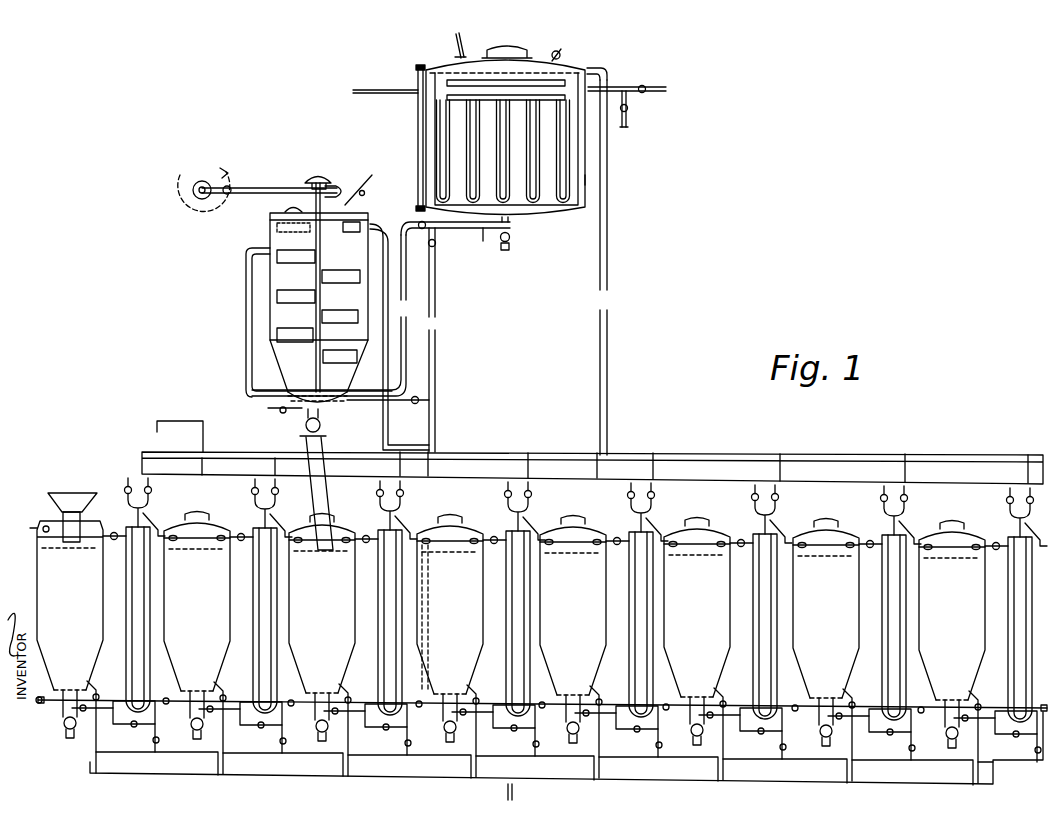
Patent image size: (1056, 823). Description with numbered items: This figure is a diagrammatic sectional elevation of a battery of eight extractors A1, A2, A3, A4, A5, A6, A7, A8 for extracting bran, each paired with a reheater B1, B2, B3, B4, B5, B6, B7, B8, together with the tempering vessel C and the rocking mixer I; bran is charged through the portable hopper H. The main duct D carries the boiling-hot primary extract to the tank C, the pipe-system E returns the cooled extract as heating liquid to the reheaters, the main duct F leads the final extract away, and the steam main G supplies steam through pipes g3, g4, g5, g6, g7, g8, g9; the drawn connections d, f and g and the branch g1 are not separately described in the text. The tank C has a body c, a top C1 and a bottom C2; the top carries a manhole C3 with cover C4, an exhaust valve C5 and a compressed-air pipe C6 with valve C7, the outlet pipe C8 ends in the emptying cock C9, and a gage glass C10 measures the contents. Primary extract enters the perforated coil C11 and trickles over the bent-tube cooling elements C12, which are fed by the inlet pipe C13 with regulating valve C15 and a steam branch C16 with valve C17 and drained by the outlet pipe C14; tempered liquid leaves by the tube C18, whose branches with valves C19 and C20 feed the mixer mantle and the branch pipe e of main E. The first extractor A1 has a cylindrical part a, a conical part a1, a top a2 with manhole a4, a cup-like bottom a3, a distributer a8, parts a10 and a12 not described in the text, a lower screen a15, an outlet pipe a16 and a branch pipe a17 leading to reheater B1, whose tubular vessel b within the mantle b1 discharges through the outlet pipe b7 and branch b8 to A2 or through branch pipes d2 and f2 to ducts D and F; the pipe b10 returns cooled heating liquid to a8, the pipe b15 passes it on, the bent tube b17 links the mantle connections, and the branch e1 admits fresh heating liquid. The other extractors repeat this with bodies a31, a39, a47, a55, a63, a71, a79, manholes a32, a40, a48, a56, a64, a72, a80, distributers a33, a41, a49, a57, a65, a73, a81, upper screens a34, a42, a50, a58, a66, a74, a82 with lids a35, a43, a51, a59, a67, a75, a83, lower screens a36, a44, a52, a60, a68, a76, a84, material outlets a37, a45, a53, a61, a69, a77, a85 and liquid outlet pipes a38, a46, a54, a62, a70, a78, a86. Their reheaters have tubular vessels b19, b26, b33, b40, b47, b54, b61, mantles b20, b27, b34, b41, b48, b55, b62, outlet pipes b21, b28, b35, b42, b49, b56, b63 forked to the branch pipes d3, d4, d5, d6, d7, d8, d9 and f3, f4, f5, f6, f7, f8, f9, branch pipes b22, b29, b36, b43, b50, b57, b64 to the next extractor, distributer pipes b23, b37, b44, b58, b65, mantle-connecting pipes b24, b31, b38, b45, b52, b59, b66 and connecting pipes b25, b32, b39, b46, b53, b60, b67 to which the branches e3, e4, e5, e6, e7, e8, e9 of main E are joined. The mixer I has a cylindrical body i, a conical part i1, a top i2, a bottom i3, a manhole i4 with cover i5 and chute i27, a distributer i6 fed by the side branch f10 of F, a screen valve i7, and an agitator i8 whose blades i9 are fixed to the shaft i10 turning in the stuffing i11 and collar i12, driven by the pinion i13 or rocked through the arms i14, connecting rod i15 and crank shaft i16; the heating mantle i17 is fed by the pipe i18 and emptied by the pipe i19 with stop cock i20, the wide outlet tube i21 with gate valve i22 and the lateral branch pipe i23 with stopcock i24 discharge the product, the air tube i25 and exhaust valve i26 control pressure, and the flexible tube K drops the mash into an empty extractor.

The extractor A1 is at (70, 605).
The extractor A2 is at (197, 602).
The extractor A3 is at (322, 604).
The extractor A4 is at (450, 605).
The extractor A5 is at (573, 606).
The extractor A6 is at (697, 608).
The extractor A7 is at (826, 609).
The extractor A8 is at (952, 611).
The reheater B1 is at (125, 668).
The reheater B2 is at (252, 669).
The reheater B3 is at (378, 669).
The reheater B4 is at (505, 667).
The reheater B5 is at (629, 669).
The reheater B6 is at (753, 669).
The reheater B7 is at (881, 669).
The reheater B8 is at (1007, 671).
The tempering vessel C is at (588, 193).
The body of tempering tank c is at (588, 180).
The top of tempering tank C1 is at (578, 68).
The bottom of tempering tank C2 is at (530, 212).
The manhole C3 is at (538, 60).
The manhole cover C4 is at (500, 52).
The exhaust valve C5 is at (561, 53).
The compressed-air pipe C6 is at (454, 40).
The valve C7 is at (456, 50).
The outlet pipe C8 is at (510, 240).
The emptying cock C9 is at (508, 250).
The gage glass C10 is at (418, 129).
The perforated coil C11 is at (592, 69).
The cooling elements C12 is at (446, 134).
The inlet pipe C13 is at (666, 88).
The outlet pipe C14 is at (362, 89).
The valve C15 is at (644, 86).
The steam branch pipe C16 is at (627, 127).
The valve C17 is at (628, 109).
The outlet tube C18 is at (482, 242).
The valve C19 is at (419, 223).
The valve C20 is at (434, 246).
The main duct D is at (127, 470).
The pipe-system E is at (150, 752).
The main duct F is at (562, 453).
The steam-main G is at (645, 781).
The hopper H is at (64, 490).
The rocking mixer I is at (270, 305).
The flexible tube K is at (318, 469).
The supply pipe d is at (608, 310).
The branch pipe d2 is at (127, 481).
The branch pipe d3 is at (254, 492).
The branch pipe d4 is at (365, 466).
The branch pipe d5 is at (488, 465).
The branch pipe d6 is at (625, 467).
The branch pipe d7 is at (745, 467).
The branch pipe d8 is at (865, 466).
The branch pipe d9 is at (990, 466).
The branch pipe e is at (435, 330).
The branch pipe e1 is at (159, 741).
The branch pipe e3 is at (284, 742).
The branch pipe e4 is at (406, 752).
The branch pipe e5 is at (536, 743).
The branch pipe e6 is at (656, 743).
The branch pipe e7 is at (771, 744).
The branch pipe e8 is at (896, 745).
The branch pipe e9 is at (1036, 746).
The feed pipe f is at (180, 426).
The branch pipe f2 is at (170, 463).
The branch pipe f3 is at (245, 464).
The branch pipe f4 is at (413, 466).
The branch pipe f5 is at (548, 466).
The branch pipe f6 is at (670, 466).
The branch pipe f7 is at (800, 467).
The branch pipe f8 is at (925, 467).
The branch pipe f9 is at (1015, 466).
The side branch f10 is at (383, 258).
The drain outlet g is at (513, 798).
The drain branch g1 is at (95, 766).
The steam pipe g3 is at (247, 764).
The steam pipe g4 is at (407, 766).
The steam pipe g5 is at (497, 765).
The steam pipe g6 is at (622, 766).
The steam pipe g7 is at (747, 766).
The steam pipe g8 is at (872, 767).
The steam pipe g9 is at (980, 773).
The cylindrical main body i is at (270, 230).
The conical lower part i1 is at (352, 352).
The top i2 is at (365, 201).
The cup-like bottom i3 is at (331, 403).
The manhole i4 is at (287, 209).
The manhole cover i5 is at (312, 236).
The distributer i6 is at (346, 234).
The screen valve i7 is at (335, 377).
The agitator i8 is at (316, 268).
The wing-like blades i9 is at (318, 307).
The shaft i10 is at (317, 178).
The stuffing i11 is at (340, 186).
The collar i12 is at (313, 183).
The pinion i13 is at (313, 176).
The arms i14 is at (328, 184).
The connecting rod i15 is at (229, 186).
The crank shaft i16 is at (204, 200).
The heating mantle i17 is at (272, 366).
The pipe i18 is at (404, 306).
The pipe i19 is at (247, 342).
The stop cock i20 is at (415, 396).
The outlet tube i21 is at (326, 422).
The gate valve i22 is at (305, 428).
The lateral branch pipe i23 is at (270, 408).
The stopcock i24 is at (282, 413).
The air tube i25 is at (372, 178).
The exhaust valve i26 is at (355, 183).
The chute i27 is at (293, 233).
The cylindrical main part a is at (36, 559).
The lower conical part a1 is at (84, 644).
The top a2 is at (32, 521).
The cup-like bottom a3 is at (62, 712).
The manhole a4 is at (56, 494).
The distributer a8 is at (42, 530).
The port a10 is at (50, 536).
The port a12 is at (86, 543).
The lower screen a15 is at (72, 688).
The outlet pipe a16 is at (64, 726).
The branch pipe a17 is at (80, 735).
The body a31 is at (164, 597).
The manhole a32 is at (203, 517).
The distributer a33 is at (173, 541).
The upper screen a34 is at (208, 543).
The lid a35 is at (197, 574).
The lower removable screen a36 is at (198, 688).
The outlet for exhausted material a37 is at (194, 714).
The outlet pipe a38 is at (222, 740).
The body a39 is at (291, 597).
The manhole a40 is at (332, 518).
The distributer a41 is at (298, 542).
The upper screen a42 is at (336, 545).
The lid a43 is at (322, 579).
The lower removable screen a44 is at (326, 688).
The outlet for exhausted material a45 is at (314, 717).
The outlet pipe a46 is at (346, 742).
The body a47 is at (481, 601).
The manhole a48 is at (462, 518).
The distributer a49 is at (476, 550).
The upper screen a50 is at (432, 552).
The lid a51 is at (458, 546).
The lower removable screen a52 is at (454, 688).
The outlet for exhausted material a53 is at (443, 718).
The outlet pipe a54 is at (468, 722).
The body a55 is at (545, 597).
The manhole a56 is at (580, 520).
The distributer a57 is at (552, 544).
The upper screen a58 is at (586, 546).
The lid a59 is at (573, 574).
The lower removable screen a60 is at (577, 690).
The outlet for exhausted material a61 is at (570, 718).
The outlet pipe a62 is at (594, 724).
The body a63 is at (672, 601).
The manhole a64 is at (704, 520).
The distributer a65 is at (674, 546).
The upper screen a66 is at (716, 548).
The lid a67 is at (700, 579).
The lower removable screen a68 is at (701, 692).
The outlet for exhausted material a69 is at (690, 718).
The outlet pipe a70 is at (720, 728).
The body a71 is at (791, 601).
The manhole a72 is at (832, 521).
The distributer a73 is at (799, 548).
The upper screen a74 is at (836, 548).
The lid a75 is at (822, 579).
The lower removable screen a76 is at (826, 692).
The outlet for exhausted material a77 is at (818, 720).
The outlet pipe a78 is at (848, 730).
The body a79 is at (920, 609).
The manhole a80 is at (960, 523).
The distributer a81 is at (924, 550).
The upper screen a82 is at (961, 550).
The lid a83 is at (948, 579).
The lower removable screen a84 is at (952, 694).
The outlet for exhausted material a85 is at (944, 721).
The outlet pipe a86 is at (975, 730).
The tubular vessel b is at (139, 670).
The mantle b1 is at (128, 606).
The outlet pipe b7 is at (126, 522).
The branch pipe b8 is at (146, 521).
The pipe b10 is at (118, 547).
The pipe b15 is at (42, 697).
The bent tube b17 is at (120, 726).
The tubular vessel b19 is at (285, 669).
The mantle b20 is at (252, 612).
The outlet pipe b21 is at (251, 512).
The branch pipe b22 is at (283, 521).
The pipe b23 is at (240, 552).
The pipe b24 is at (175, 689).
The pipe b25 is at (253, 741).
The tubular vessel b26 is at (405, 689).
The mantle b27 is at (265, 599).
The outlet pipe b28 is at (396, 515).
The branch pipe b29 is at (410, 524).
The pipe b31 is at (280, 689).
The pipe b32 is at (373, 741).
The tubular vessel b33 is at (533, 658).
The mantle b34 is at (505, 606).
The outlet pipe b35 is at (512, 514).
The branch pipe b36 is at (534, 526).
The pipe b37 is at (495, 552).
The pipe b38 is at (478, 689).
The pipe b39 is at (488, 741).
The tubular vessel b40 is at (648, 689).
The mantle b41 is at (603, 562).
The outlet pipe b42 is at (636, 515).
The branch pipe b43 is at (680, 522).
The pipe b44 is at (630, 614).
The pipe b45 is at (674, 625).
The pipe b46 is at (610, 741).
The tubular vessel b47 is at (728, 689).
The mantle b48 is at (756, 618).
The outlet pipe b49 is at (762, 518).
The branch pipe b50 is at (784, 530).
The pipe b52 is at (748, 689).
The pipe b53 is at (735, 741).
The tubular vessel b54 is at (860, 689).
The mantle b55 is at (793, 689).
The outlet pipe b56 is at (888, 518).
The branch pipe b57 is at (900, 528).
The pipe b58 is at (870, 562).
The pipe b59 is at (886, 628).
The pipe b60 is at (860, 741).
The tubular vessel b61 is at (1034, 652).
The mantle b62 is at (1014, 622).
The outlet pipe b63 is at (1018, 520).
The branch pipe b64 is at (1042, 530).
The pipe b65 is at (998, 564).
The pipe b66 is at (915, 689).
The pipe b67 is at (1010, 744).